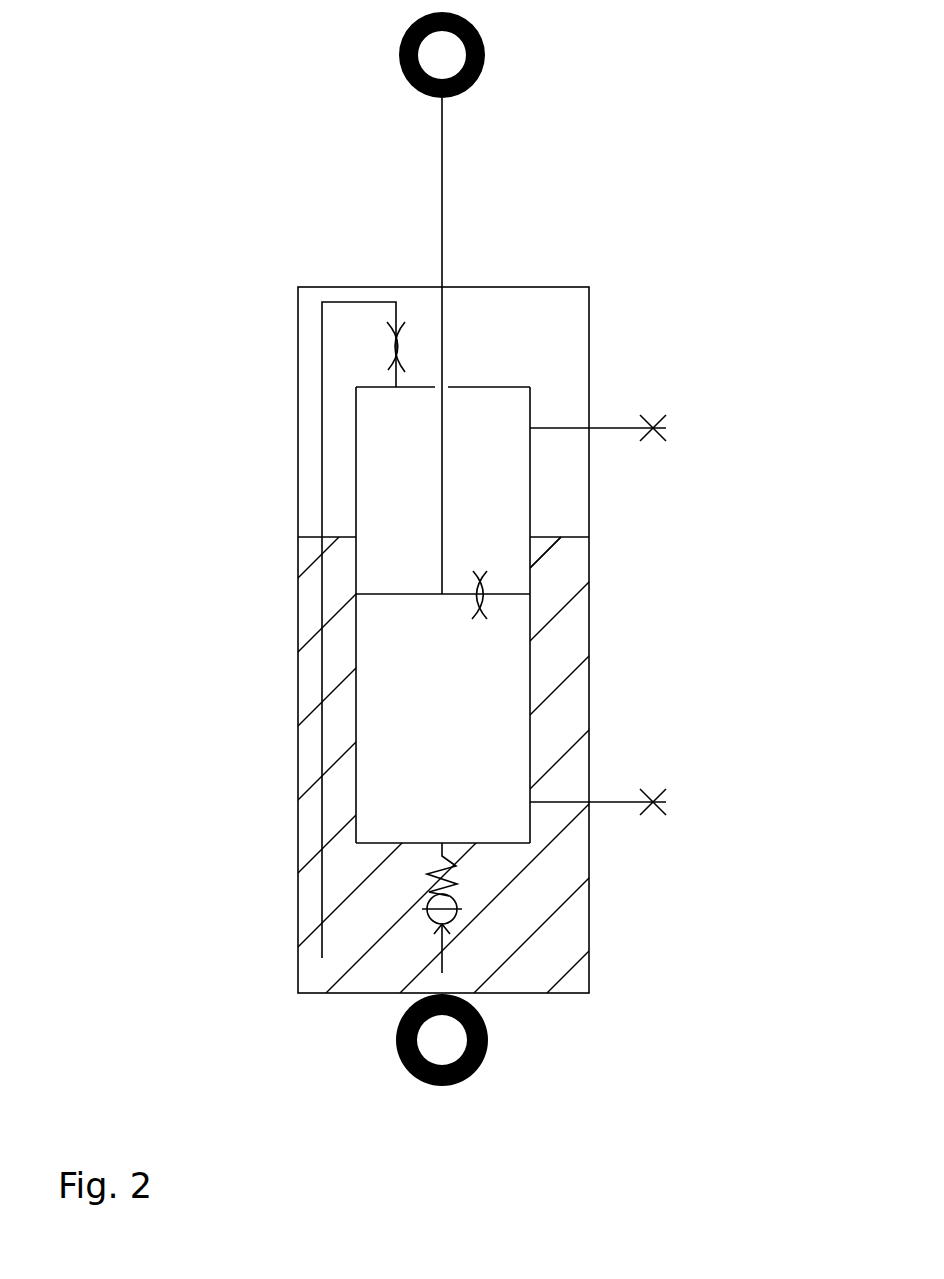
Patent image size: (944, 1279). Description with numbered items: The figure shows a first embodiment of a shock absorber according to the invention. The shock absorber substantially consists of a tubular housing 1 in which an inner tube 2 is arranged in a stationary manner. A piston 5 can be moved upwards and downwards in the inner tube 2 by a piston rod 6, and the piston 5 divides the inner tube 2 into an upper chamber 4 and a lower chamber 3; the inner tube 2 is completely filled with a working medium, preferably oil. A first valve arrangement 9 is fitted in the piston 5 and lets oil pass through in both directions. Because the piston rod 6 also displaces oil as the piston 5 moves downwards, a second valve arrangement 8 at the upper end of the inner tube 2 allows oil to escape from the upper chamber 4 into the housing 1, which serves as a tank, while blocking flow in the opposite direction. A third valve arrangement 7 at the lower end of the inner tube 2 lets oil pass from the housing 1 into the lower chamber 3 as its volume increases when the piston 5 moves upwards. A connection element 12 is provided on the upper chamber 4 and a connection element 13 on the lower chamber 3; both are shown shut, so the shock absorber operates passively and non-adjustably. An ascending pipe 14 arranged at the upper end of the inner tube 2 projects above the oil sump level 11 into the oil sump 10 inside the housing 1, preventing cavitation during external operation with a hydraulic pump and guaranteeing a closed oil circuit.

The tubular housing 1 is at (472, 640).
The inner tube 2 is at (605, 615).
The lower chamber 3 is at (310, 840).
The upper chamber 4 is at (294, 347).
The piston 5 is at (300, 513).
The piston rod 6 is at (299, 333).
The third valve arrangement 7 is at (635, 977).
The second valve arrangement 8 is at (399, 340).
The first valve arrangement 9 is at (481, 580).
The oil sump 10 is at (688, 614).
The oil sump level 11 is at (563, 537).
The connection element 12 is at (693, 385).
The connection element 13 is at (683, 804).
The ascending pipe 14 is at (208, 630).